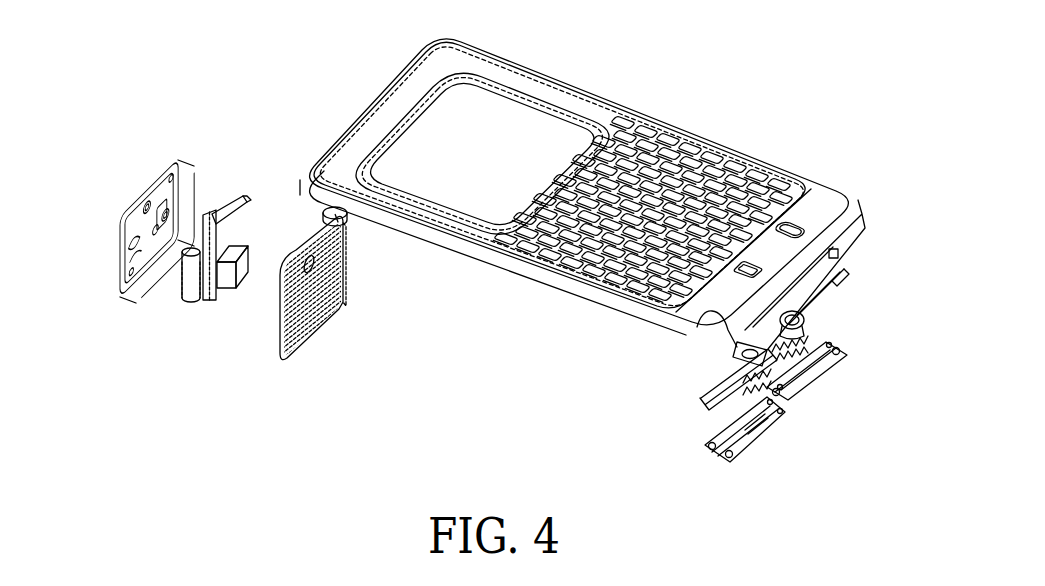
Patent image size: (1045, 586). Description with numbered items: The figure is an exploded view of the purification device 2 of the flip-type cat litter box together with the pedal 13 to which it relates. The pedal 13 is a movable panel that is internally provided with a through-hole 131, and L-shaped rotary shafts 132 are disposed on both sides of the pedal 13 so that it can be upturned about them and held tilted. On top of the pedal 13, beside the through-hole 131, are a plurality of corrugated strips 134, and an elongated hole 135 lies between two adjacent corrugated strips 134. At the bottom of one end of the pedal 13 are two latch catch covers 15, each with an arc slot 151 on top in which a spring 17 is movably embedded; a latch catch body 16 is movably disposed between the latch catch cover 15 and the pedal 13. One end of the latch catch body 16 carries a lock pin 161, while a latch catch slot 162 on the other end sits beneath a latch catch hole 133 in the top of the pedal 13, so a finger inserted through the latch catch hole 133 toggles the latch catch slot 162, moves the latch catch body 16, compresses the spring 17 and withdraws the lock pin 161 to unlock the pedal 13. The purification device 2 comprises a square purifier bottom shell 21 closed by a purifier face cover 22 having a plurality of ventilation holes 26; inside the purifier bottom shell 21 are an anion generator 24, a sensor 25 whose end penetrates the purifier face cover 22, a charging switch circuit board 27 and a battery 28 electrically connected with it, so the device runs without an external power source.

The purification device 2 is at (209, 283).
The pedal 13 is at (616, 208).
The through-hole 131 is at (470, 177).
The rotary shafts 132 is at (469, 46).
The latch catch hole 133 is at (802, 227).
The corrugated strips 134 is at (720, 157).
The elongated hole 135 is at (768, 180).
The latch catch cover 15 is at (727, 428).
The arc slot 151 is at (735, 433).
The latch catch body 16 is at (863, 329).
The lock pin 161 is at (846, 268).
The latch catch slot 162 is at (800, 316).
The spring 17 is at (762, 392).
The purifier bottom shell 21 is at (120, 272).
The purifier face cover 22 is at (382, 310).
The anion generator 24 is at (240, 194).
The sensor 25 is at (241, 266).
The ventilation holes 26 is at (328, 288).
The charging switch circuit board 27 is at (210, 285).
The battery 28 is at (187, 282).